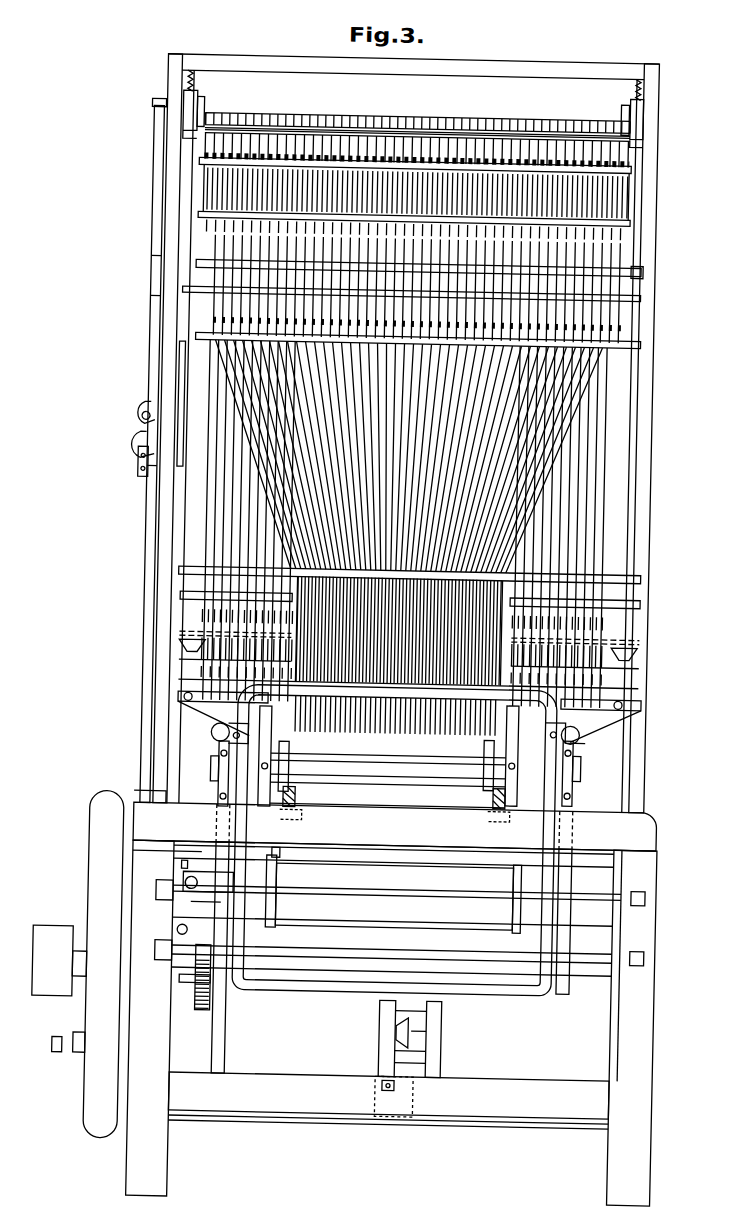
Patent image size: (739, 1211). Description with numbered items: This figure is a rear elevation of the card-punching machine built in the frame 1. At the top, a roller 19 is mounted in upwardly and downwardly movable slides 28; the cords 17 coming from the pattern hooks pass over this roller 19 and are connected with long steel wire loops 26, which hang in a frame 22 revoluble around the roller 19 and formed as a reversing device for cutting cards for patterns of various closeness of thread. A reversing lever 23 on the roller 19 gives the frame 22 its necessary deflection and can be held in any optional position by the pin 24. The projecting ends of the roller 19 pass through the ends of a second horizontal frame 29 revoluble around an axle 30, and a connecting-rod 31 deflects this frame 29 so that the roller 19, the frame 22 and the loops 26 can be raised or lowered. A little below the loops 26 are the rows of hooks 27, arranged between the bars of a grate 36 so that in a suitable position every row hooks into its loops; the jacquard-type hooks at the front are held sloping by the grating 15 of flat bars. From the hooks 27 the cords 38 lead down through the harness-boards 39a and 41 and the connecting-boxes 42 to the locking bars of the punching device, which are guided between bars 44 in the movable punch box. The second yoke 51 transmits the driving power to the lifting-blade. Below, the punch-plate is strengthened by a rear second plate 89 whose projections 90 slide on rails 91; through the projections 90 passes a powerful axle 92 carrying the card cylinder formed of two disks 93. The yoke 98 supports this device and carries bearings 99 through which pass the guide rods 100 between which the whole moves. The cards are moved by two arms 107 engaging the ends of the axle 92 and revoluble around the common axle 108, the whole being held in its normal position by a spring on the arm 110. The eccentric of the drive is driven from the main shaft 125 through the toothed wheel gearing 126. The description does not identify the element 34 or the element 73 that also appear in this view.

The frame 1 is at (160, 67).
The grating 15 is at (183, 656).
The cords 17 is at (578, 481).
The roller 19 is at (372, 130).
The frame 22 is at (628, 165).
The reversing lever 23 is at (147, 318).
The pin 24 is at (138, 431).
The steel wire loops 26 is at (235, 205).
The hooks 27 is at (235, 255).
The slides 28 is at (177, 114).
The second horizontal frame 29 is at (197, 116).
The axle 30 is at (498, 133).
The connecting-rod 31 is at (180, 470).
The rail 34 is at (637, 293).
The grate 36 is at (640, 265).
The cords 38 is at (407, 457).
The harness-board 39a is at (638, 341).
The harness-board 41 is at (181, 574).
The connecting-boxes 42 is at (416, 692).
The bars 44 is at (248, 812).
The second yoke 51 is at (180, 710).
The shaft 73 is at (229, 890).
The rear second plate 89 is at (388, 751).
The projections 90 is at (295, 783).
The rails 91 is at (297, 808).
The axle 92 is at (388, 790).
The disks 93 is at (279, 752).
The yoke 98 is at (325, 693).
The bearings 99 is at (219, 742).
The guide rods 100 is at (234, 735).
The arms 107 is at (225, 794).
The common axle 108 is at (518, 955).
The arm 110 is at (425, 1060).
The main shaft 125 is at (78, 932).
The toothed wheel gearing 126 is at (219, 1015).